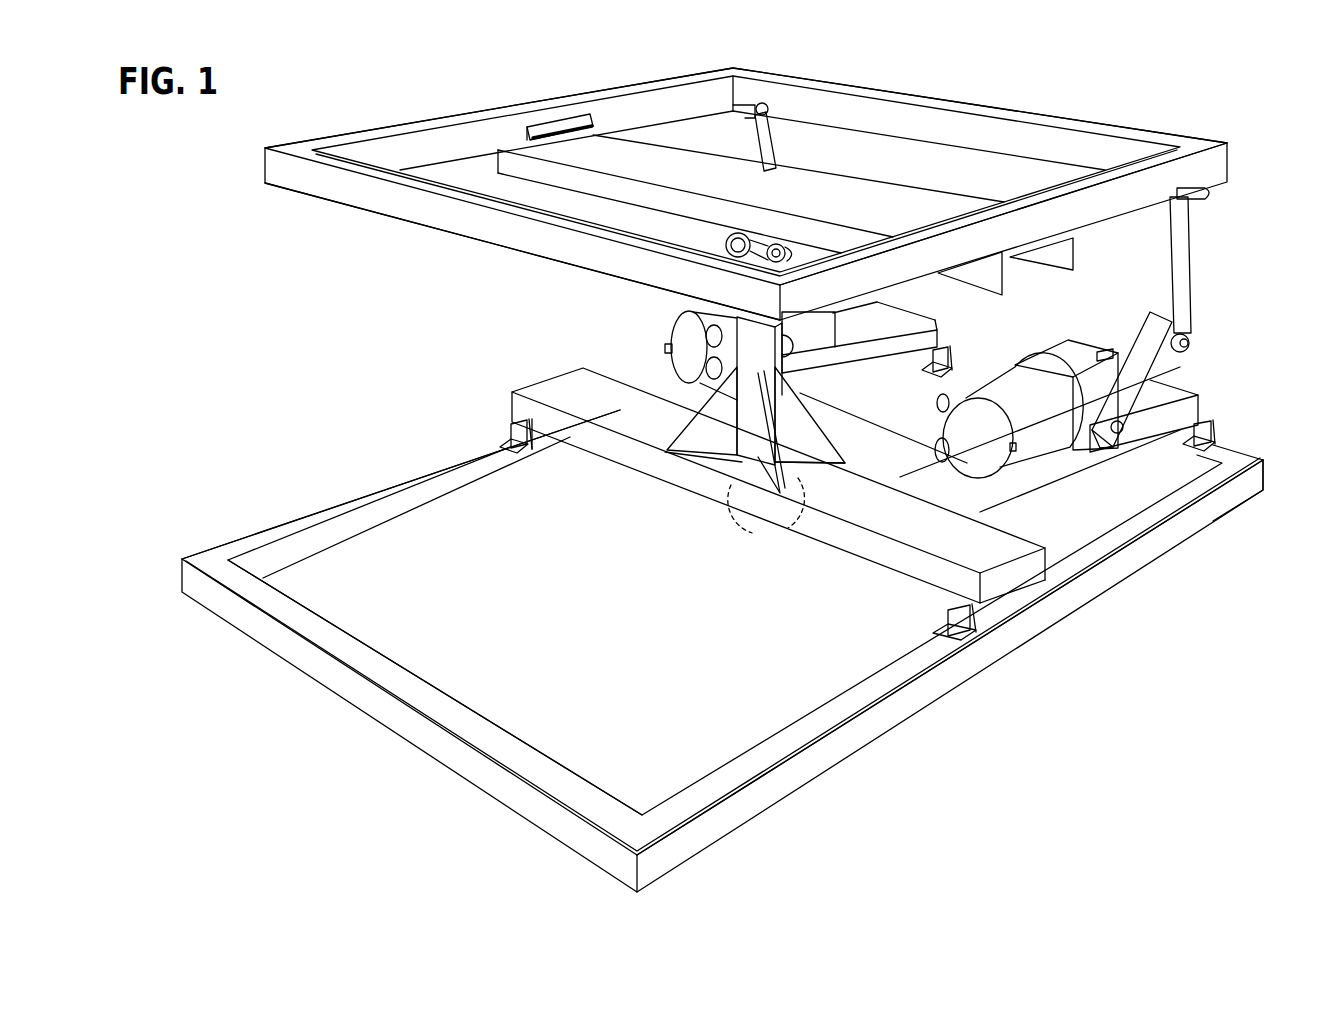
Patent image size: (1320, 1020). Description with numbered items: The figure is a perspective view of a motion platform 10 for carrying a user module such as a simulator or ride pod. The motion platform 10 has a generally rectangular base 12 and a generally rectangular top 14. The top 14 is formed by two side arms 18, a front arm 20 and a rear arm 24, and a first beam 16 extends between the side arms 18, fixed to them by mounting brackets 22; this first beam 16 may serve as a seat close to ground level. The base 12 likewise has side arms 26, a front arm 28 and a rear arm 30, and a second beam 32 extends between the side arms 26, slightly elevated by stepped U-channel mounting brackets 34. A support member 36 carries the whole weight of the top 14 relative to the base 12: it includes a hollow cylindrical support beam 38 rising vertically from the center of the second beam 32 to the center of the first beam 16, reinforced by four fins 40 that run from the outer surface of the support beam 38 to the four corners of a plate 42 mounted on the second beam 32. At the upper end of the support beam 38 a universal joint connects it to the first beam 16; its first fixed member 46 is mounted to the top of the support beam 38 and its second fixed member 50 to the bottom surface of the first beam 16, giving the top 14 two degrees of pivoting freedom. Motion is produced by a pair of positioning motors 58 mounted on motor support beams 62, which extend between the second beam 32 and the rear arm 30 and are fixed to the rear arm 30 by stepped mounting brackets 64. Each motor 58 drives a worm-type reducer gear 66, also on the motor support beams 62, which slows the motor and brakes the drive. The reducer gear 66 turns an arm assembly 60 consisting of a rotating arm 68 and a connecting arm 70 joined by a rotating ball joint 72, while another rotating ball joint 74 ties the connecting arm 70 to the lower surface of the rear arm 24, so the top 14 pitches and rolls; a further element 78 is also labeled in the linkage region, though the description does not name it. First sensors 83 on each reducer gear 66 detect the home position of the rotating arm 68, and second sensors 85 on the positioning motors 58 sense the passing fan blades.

The motion platform 10 is at (298, 354).
The base 12 is at (252, 528).
The top 14 is at (340, 222).
The first beam 16 is at (764, 193).
The side arms 18 is at (674, 116).
The front arm 20 is at (502, 240).
The mounting brackets 22 is at (540, 128).
The rear arm 24 is at (981, 140).
The side arms 26 is at (430, 513).
The front arm 28 is at (443, 700).
The rear arm 30 is at (1250, 464).
The second beam 32 is at (636, 417).
The stepped mounting brackets 34 is at (502, 438).
The support member 36 is at (815, 402).
The support beam 38 is at (770, 364).
The fins 40 is at (720, 439).
The plate 42 is at (790, 510).
The first fixed member 46 is at (768, 258).
The second fixed member 50 is at (728, 246).
The positioning motors 58 is at (704, 360).
The arm assemblies 60 is at (1208, 300).
The motor support beams 62 is at (891, 332).
The stepped mounting brackets 64 is at (942, 356).
The reducer gear 66 is at (826, 350).
The rotating arm 68 is at (1122, 436).
The connecting arm 70 is at (772, 146).
The rotating ball joint 72 is at (1196, 345).
The rotating ball joint 74 is at (748, 118).
The link arm 78 is at (1102, 443).
The first sensors 83 is at (1106, 352).
The second sensors 85 is at (668, 347).